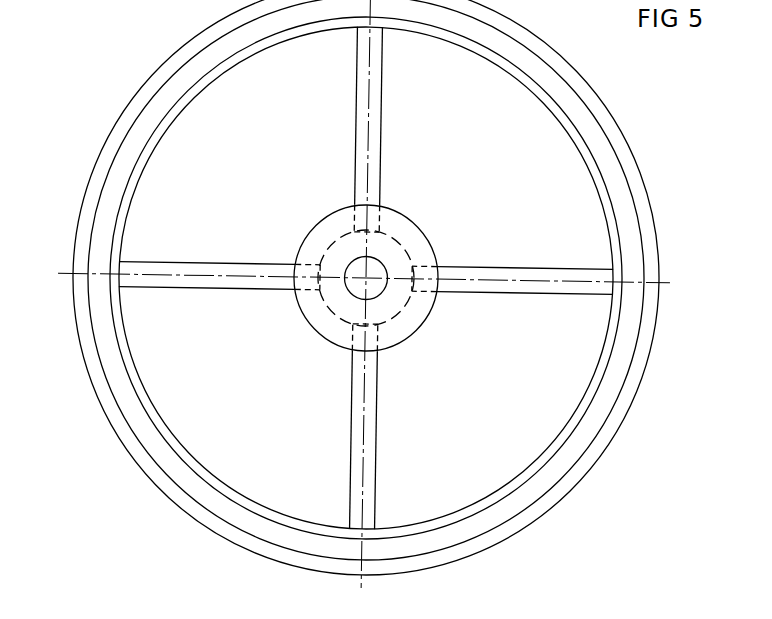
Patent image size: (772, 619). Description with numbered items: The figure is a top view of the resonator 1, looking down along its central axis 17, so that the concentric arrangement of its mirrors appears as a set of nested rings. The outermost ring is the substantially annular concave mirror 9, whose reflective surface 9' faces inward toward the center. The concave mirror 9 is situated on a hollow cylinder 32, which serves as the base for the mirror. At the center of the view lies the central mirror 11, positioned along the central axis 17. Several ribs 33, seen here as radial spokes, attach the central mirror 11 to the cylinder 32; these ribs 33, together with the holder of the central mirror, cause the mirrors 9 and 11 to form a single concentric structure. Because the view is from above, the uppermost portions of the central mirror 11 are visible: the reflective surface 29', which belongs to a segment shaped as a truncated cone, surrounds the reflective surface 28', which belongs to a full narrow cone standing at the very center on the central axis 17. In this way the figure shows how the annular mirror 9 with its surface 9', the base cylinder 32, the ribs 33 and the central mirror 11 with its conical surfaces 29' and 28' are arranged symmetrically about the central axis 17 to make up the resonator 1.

The resonator 1 is at (680, 170).
The annular concave mirror 9 is at (342, 290).
The reflective surface 9' is at (348, 277).
The hollow cylinder 32 is at (168, 431).
The ribs 33 is at (373, 121).
The central mirror 11 is at (464, 247).
The reflective surface of segment 28 28' is at (409, 243).
The reflective surface of segment 29 29' is at (401, 285).
The central axis 17 is at (365, 279).